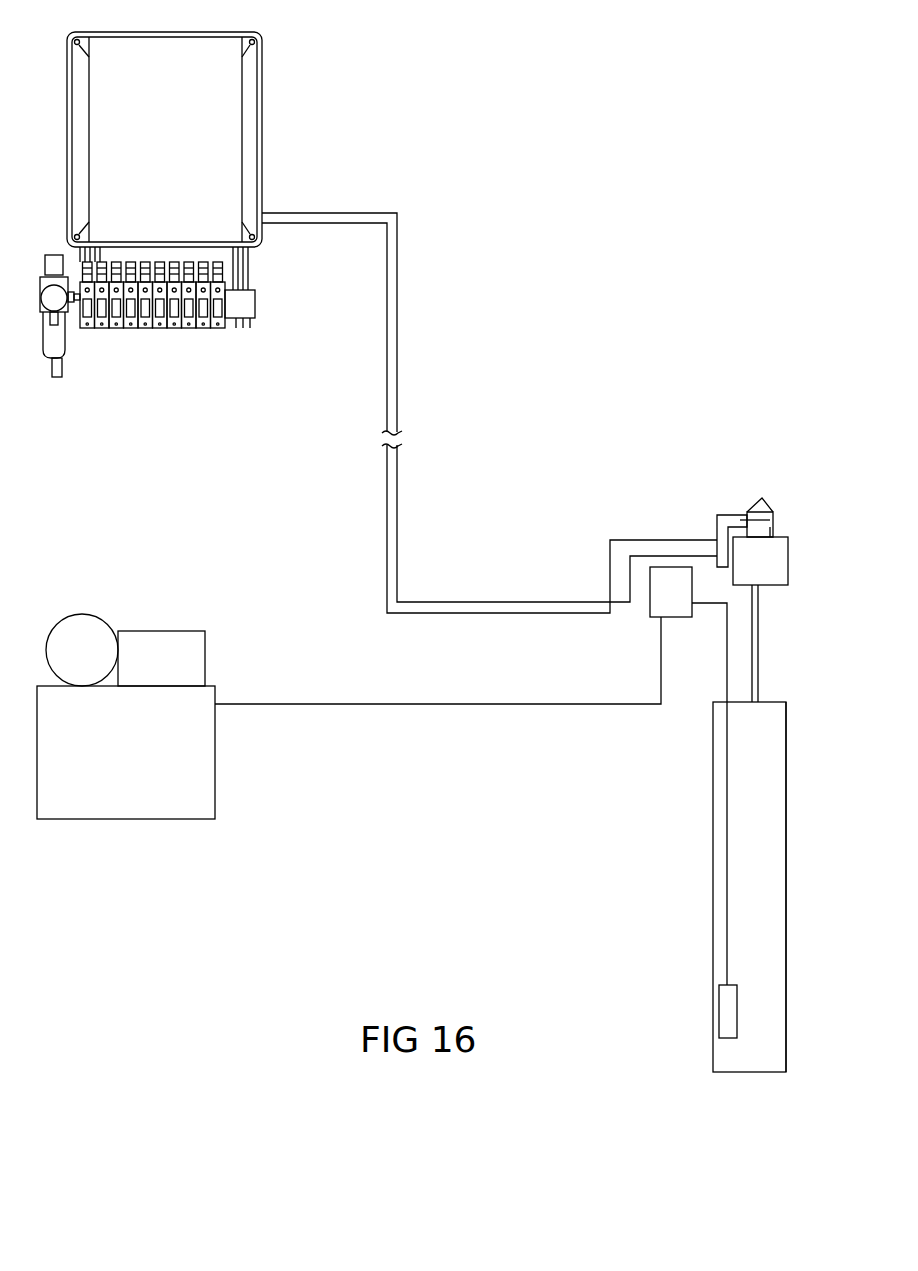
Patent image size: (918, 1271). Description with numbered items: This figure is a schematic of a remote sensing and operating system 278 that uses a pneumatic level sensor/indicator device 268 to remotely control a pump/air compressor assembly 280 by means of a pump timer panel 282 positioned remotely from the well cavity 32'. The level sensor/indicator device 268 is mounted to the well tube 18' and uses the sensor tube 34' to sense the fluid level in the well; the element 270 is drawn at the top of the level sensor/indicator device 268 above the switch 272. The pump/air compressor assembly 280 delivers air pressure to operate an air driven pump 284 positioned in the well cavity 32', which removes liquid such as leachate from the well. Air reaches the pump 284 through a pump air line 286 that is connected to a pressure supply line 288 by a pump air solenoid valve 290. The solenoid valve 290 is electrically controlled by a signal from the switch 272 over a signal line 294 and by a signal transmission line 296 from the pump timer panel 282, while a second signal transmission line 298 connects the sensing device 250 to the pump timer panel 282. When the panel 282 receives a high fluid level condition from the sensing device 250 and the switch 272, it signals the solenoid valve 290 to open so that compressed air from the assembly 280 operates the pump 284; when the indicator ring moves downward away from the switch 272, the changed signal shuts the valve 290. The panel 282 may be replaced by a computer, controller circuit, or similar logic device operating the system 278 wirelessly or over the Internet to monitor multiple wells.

The pump timer panel 282 is at (250, 125).
The remote sensing and operating system 278 is at (607, 300).
The second signal transmission line 298 is at (397, 383).
The signal transmission line 296 is at (387, 567).
The sensing device 250 is at (717, 535).
The switch 272 is at (749, 510).
The valve actuator 270 is at (753, 511).
The level sensor/indicator device 268 is at (803, 524).
The signal line 294 is at (703, 557).
The sensor tube 34' is at (784, 643).
The pump air solenoid valve 290 is at (657, 613).
The pump air line 286 is at (727, 665).
The pressure supply line 288 is at (375, 704).
The well tube 18' is at (778, 887).
The well cavity 32' is at (798, 887).
The air driven pump 284 is at (722, 1005).
The pump/air compressor assembly 280 is at (143, 819).